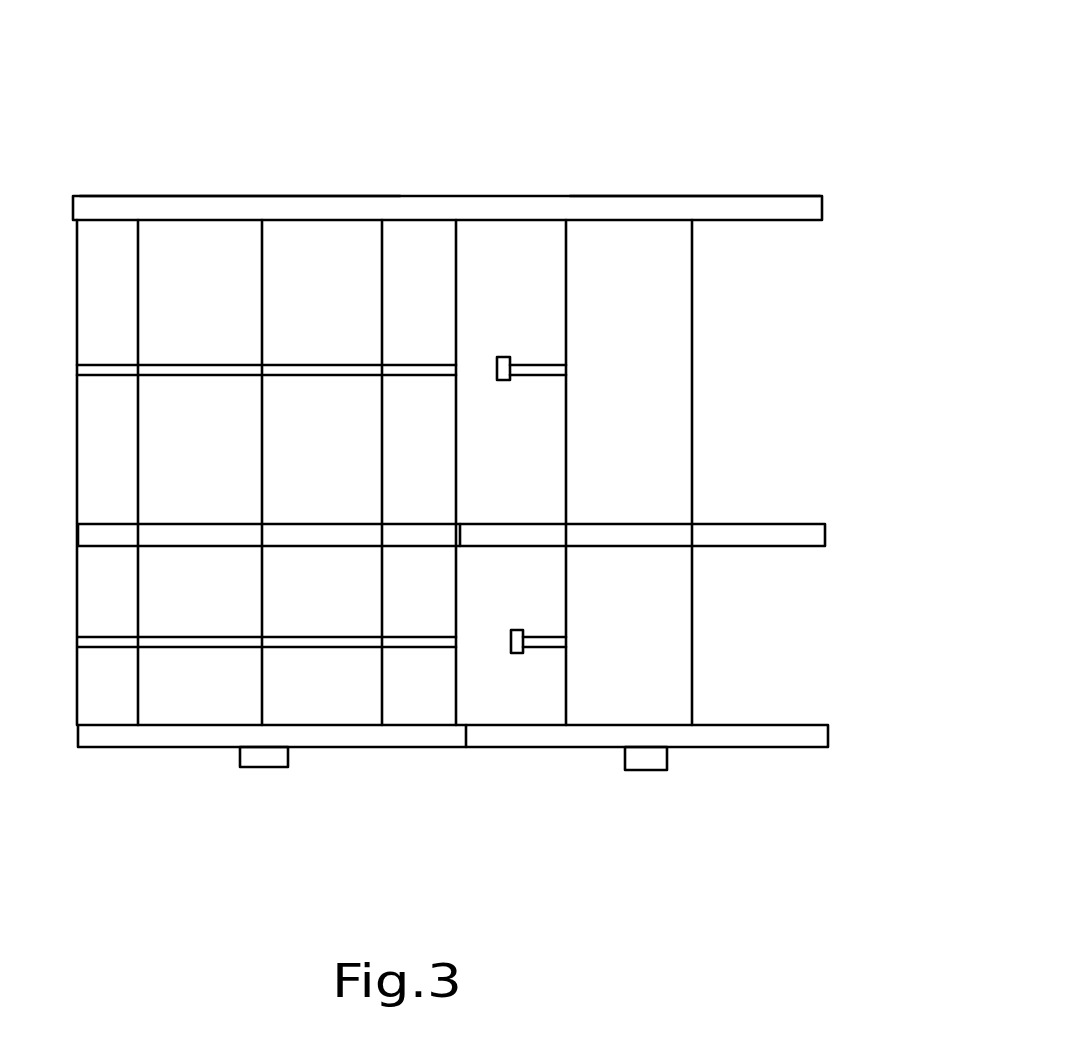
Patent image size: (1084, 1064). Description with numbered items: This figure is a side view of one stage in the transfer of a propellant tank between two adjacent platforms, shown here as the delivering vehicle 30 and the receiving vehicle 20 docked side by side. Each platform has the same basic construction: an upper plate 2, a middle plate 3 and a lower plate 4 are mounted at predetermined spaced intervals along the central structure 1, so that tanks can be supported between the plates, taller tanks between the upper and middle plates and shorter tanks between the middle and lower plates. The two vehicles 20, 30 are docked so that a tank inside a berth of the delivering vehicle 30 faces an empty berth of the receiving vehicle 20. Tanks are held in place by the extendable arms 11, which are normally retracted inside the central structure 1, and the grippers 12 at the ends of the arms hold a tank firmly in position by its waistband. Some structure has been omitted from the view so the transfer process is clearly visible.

The central structure 1 is at (691, 374).
The upper plate 2 is at (800, 212).
The middle plate 3 is at (770, 524).
The lower plate 4 is at (763, 725).
The extendable arm 11 is at (525, 362).
The gripper 12 is at (502, 357).
The receiving vehicle 20 is at (627, 196).
The delivering vehicle 30 is at (188, 196).